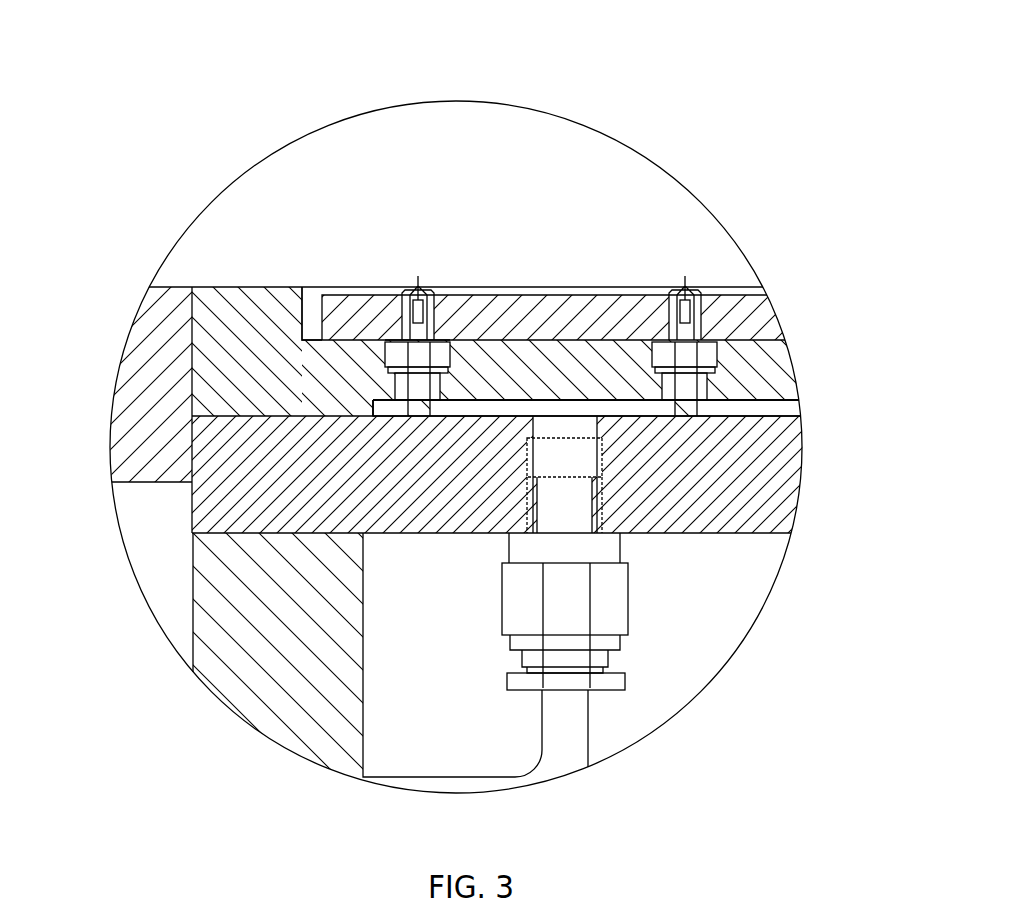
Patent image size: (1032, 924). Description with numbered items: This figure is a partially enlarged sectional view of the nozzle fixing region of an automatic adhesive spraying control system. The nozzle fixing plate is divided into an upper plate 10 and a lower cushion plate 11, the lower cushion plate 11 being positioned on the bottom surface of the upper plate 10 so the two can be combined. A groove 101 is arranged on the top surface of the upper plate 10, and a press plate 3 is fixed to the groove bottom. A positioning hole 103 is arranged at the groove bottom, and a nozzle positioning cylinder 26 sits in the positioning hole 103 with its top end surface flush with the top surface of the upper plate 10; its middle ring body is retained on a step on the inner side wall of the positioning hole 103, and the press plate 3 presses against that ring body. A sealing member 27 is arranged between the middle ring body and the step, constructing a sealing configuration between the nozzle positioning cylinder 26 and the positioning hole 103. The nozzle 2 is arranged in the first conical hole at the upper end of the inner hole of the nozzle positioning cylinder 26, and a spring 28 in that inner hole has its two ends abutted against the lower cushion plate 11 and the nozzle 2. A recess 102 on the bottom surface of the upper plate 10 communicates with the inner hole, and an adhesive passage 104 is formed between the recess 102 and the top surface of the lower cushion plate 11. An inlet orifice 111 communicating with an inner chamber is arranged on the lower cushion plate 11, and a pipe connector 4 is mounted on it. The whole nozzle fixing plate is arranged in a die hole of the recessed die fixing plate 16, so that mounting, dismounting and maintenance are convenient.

The upper plate 10 is at (252, 298).
The groove 101 is at (312, 303).
The recess 102 is at (523, 400).
The positioning hole 103 is at (451, 345).
The adhesive passage 104 is at (708, 407).
The lower cushion plate 11 is at (783, 490).
The inlet orifice 111 is at (555, 423).
The recessed die fixing plate 16 is at (158, 318).
The nozzle 2 is at (417, 290).
The nozzle positioning cylinder 26 is at (383, 348).
The sealing member 27 is at (389, 370).
The spring 28 is at (403, 405).
The press plate 3 is at (758, 315).
The pipe connector 4 is at (605, 598).